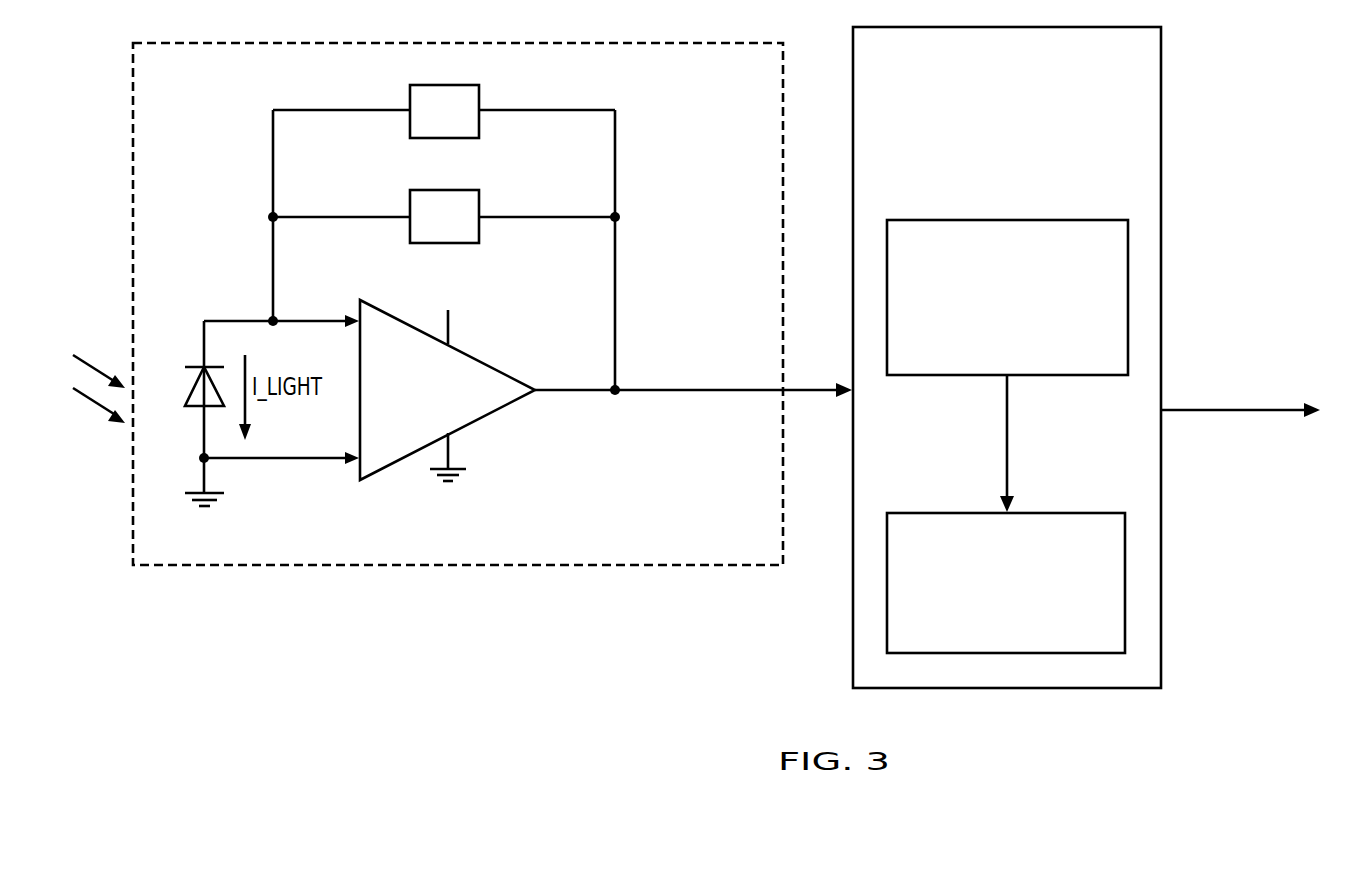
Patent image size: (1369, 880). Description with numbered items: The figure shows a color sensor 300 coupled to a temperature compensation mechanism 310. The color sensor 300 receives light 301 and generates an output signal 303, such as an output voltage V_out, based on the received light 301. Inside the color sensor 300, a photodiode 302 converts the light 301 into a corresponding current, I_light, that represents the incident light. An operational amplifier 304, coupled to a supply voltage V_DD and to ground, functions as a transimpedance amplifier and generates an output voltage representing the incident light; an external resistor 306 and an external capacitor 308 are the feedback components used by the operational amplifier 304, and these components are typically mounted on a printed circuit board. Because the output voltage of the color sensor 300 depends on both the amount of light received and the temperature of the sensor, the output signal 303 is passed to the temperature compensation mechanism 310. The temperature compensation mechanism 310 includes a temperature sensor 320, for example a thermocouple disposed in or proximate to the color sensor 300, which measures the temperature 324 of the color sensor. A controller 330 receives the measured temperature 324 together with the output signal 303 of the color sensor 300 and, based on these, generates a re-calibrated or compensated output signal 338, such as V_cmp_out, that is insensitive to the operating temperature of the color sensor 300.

The color sensor 300 is at (777, 80).
The light 301 is at (83, 353).
The photodiode 302 is at (188, 389).
The output signal 303 is at (683, 392).
The operational amplifier 304 is at (447, 378).
The resistor 306 is at (444, 96).
The capacitor 308 is at (444, 200).
The temperature compensation mechanism 310 is at (1025, 162).
The temperature sensor 320 is at (1025, 344).
The temperature 324 is at (1007, 462).
The controller 330 is at (1025, 615).
The compensated output signal 338 is at (1257, 408).